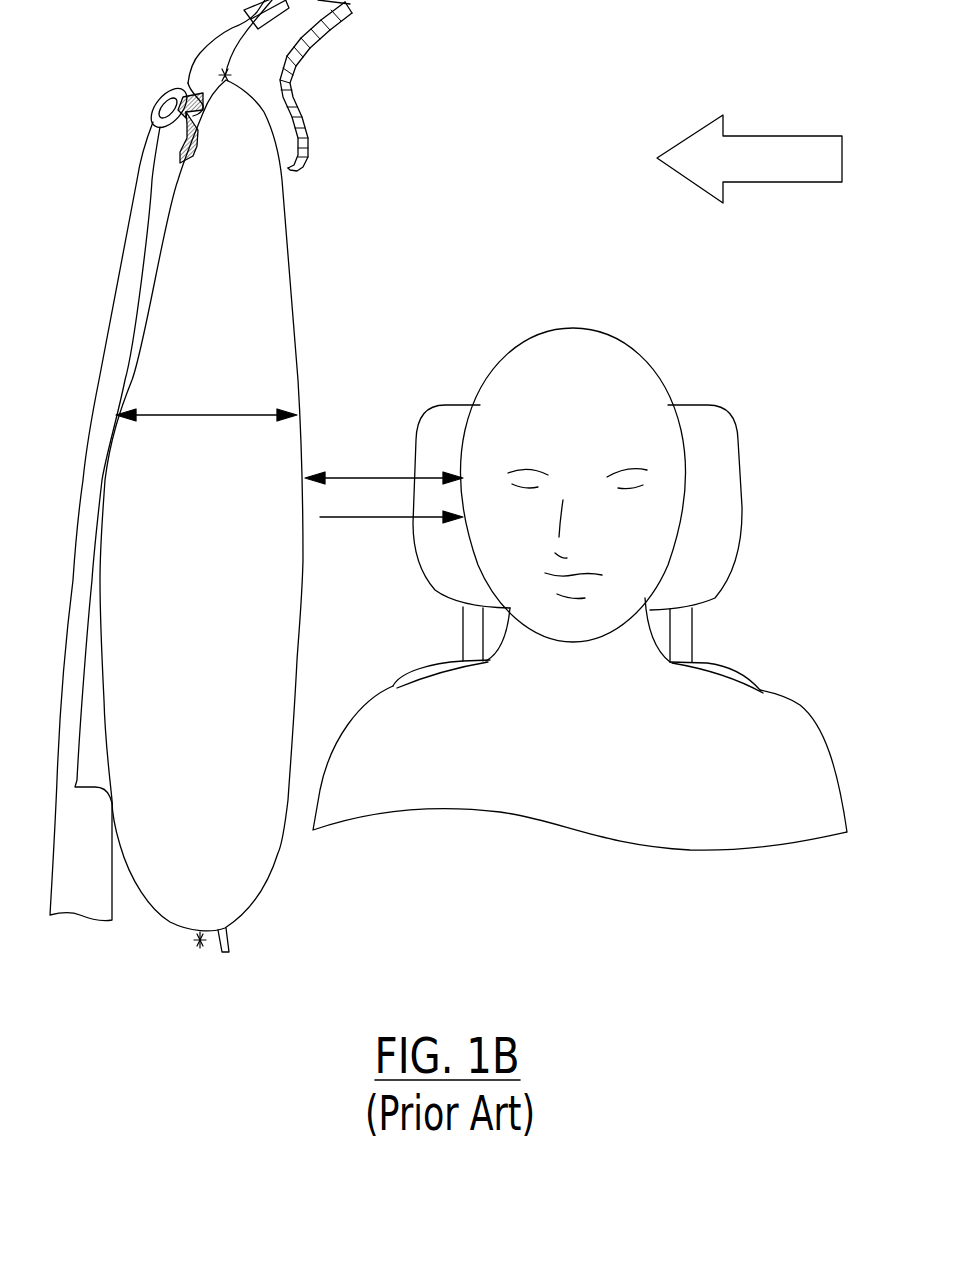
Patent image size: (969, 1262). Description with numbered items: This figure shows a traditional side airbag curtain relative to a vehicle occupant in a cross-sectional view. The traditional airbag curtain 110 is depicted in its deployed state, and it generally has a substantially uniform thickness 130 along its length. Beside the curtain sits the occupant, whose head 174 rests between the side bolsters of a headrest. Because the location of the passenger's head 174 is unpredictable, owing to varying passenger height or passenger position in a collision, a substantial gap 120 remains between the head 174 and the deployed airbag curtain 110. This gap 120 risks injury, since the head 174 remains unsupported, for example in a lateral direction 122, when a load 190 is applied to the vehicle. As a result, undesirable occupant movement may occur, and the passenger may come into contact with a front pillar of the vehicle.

The traditional airbag curtain 110 is at (297, 352).
The gap 120 is at (353, 477).
The lateral direction 122 is at (368, 518).
The thickness 130 is at (200, 410).
The passenger's head 174 is at (500, 358).
The load 190 is at (770, 136).